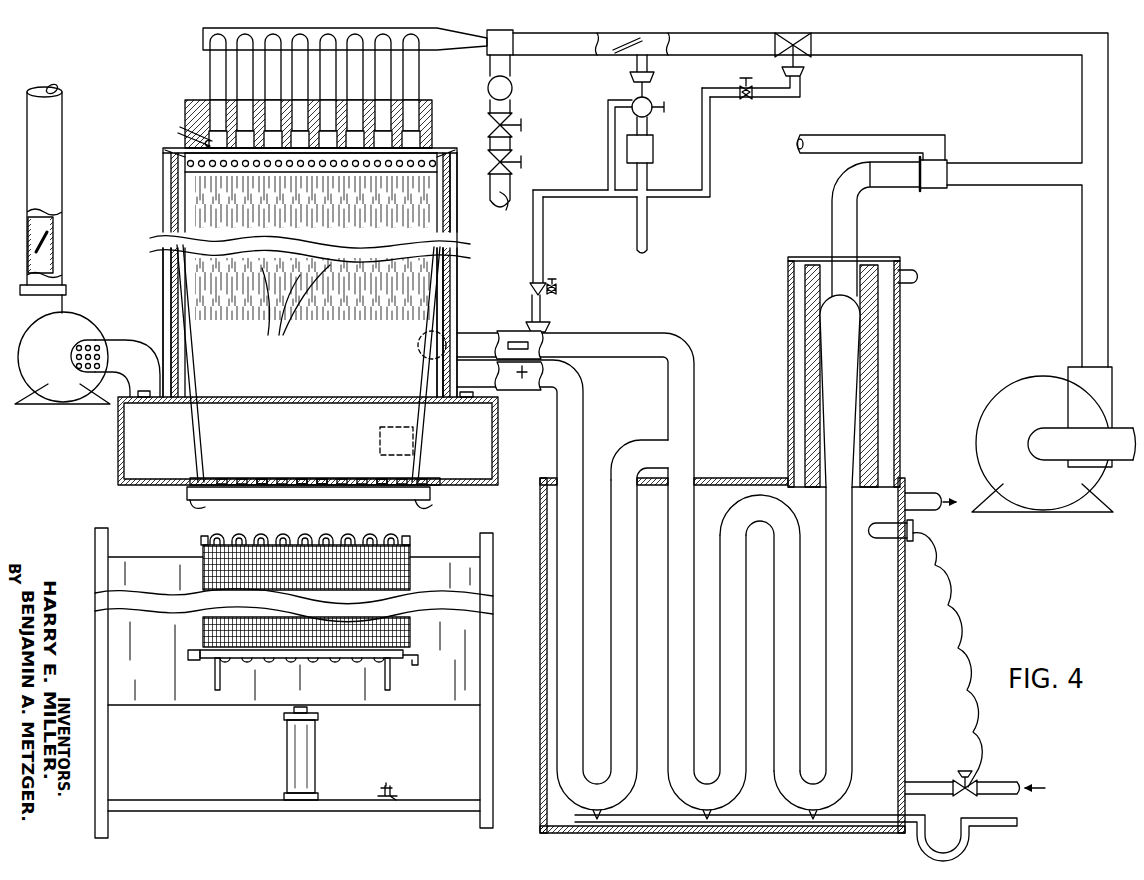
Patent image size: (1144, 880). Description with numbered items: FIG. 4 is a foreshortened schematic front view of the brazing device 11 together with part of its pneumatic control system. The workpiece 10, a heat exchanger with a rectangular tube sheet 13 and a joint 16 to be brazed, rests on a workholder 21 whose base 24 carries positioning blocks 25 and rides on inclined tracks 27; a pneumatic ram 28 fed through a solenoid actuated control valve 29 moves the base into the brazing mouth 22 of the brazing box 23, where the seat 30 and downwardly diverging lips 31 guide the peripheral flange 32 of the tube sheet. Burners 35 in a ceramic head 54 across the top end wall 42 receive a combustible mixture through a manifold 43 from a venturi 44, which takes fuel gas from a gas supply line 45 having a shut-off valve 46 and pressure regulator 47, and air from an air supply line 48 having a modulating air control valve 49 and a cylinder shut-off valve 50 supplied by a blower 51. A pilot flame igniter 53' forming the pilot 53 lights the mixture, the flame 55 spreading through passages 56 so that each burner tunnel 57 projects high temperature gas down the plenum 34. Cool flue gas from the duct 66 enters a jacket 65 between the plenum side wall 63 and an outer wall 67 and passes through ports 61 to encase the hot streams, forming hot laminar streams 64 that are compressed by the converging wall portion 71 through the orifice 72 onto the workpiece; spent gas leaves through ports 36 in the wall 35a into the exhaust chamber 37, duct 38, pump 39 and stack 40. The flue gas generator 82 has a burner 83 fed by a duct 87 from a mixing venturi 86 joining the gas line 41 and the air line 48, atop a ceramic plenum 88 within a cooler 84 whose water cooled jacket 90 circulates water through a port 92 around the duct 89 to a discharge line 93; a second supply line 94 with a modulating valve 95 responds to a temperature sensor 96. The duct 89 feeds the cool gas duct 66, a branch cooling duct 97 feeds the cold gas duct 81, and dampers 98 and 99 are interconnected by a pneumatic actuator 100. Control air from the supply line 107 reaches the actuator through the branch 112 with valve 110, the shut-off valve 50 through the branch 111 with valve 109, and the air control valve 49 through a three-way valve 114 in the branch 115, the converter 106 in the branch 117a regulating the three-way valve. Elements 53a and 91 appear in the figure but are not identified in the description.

The workpiece 10 is at (200, 575).
The brazing device 11 is at (110, 474).
The tube sheet 13 is at (203, 540).
The joint 16 is at (280, 535).
The workholder 21 is at (165, 540).
The brazing mouth 22 is at (393, 488).
The brazing box 23 is at (165, 271).
The base 24 is at (470, 687).
The blocks 25 is at (215, 680).
The inclined tracks 27 is at (106, 750).
The pneumatic motor or ram 28 is at (305, 768).
The solenoid actuated control valve 29 is at (388, 782).
The seat 30 is at (353, 488).
The downwardly diverging lips 31 is at (206, 496).
The peripheral flange 32 is at (411, 540).
The plenum 34 is at (312, 364).
The burners 35 is at (408, 127).
The wall 35a is at (224, 478).
The ports 36 is at (282, 478).
The exhaust chamber 37 is at (163, 444).
The duct 38 is at (122, 352).
The pump 39 is at (76, 334).
The exhaust stack 40 is at (50, 187).
The gas supply line 41 is at (820, 147).
The top end wall 42 is at (438, 157).
The manifold or supply line 43 is at (426, 42).
The venturi 44 is at (507, 42).
The gas supply line 45 is at (506, 165).
The solenoid operated shut-off valve 46 is at (522, 125).
The pressure regulator 47 is at (512, 86).
The air supply line 48 is at (563, 42).
The modulating air control valve 49 is at (648, 56).
The cylinder shut-off valve 50 is at (804, 62).
The blower 51 is at (1055, 414).
The pilot 53 is at (469, 322).
The pilot flame igniter 53' is at (179, 125).
The wall plate 53a is at (457, 240).
The ceramic head 54 is at (200, 112).
The flame 55 is at (328, 478).
The passages 56 is at (257, 148).
The burner tunnel 57 is at (402, 150).
The ports 61 is at (323, 170).
The side wall 63 is at (444, 207).
The hot laminar flow streams of reducing flue gas 64 is at (294, 308).
The jacket or chamber 65 is at (172, 256).
The cool flue gas duct 66 is at (680, 408).
The outer wall 67 is at (452, 222).
The converging wall portion 71 is at (194, 388).
The orifice 72 is at (300, 487).
The cold flue gas duct 81 is at (580, 422).
The flue gas generator 82 is at (901, 462).
The burner 83 is at (830, 263).
The cooler 84 is at (784, 455).
The mixing venturi 86 is at (930, 178).
The duct 87 is at (845, 237).
The ceramic plenum 88 is at (844, 387).
The duct 89 is at (840, 760).
The water cooled jacket 90 is at (886, 333).
The inlet 91 is at (945, 277).
The port 92 is at (798, 490).
The water discharge line 93 is at (917, 502).
The second cooling water supply line 94 is at (1011, 778).
The modulating control valve 95 is at (973, 777).
The cooling water temperature sensor 96 is at (917, 530).
The cooling duct 97 is at (628, 460).
The shut-off valve or damper 98 is at (503, 333).
The shut-off valve or damper 99 is at (523, 390).
The pneumatic actuator 100 is at (545, 323).
The electropneumatic converter 106 is at (654, 148).
The control air supply line 107 is at (648, 233).
The solenoid operated valve 109 is at (748, 95).
The solenoid operated valve 110 is at (553, 283).
The branch 111 is at (711, 162).
The branch 112 is at (540, 238).
The three-way control valve 114 is at (660, 110).
The branch 115 is at (606, 155).
The branch 117a is at (648, 182).